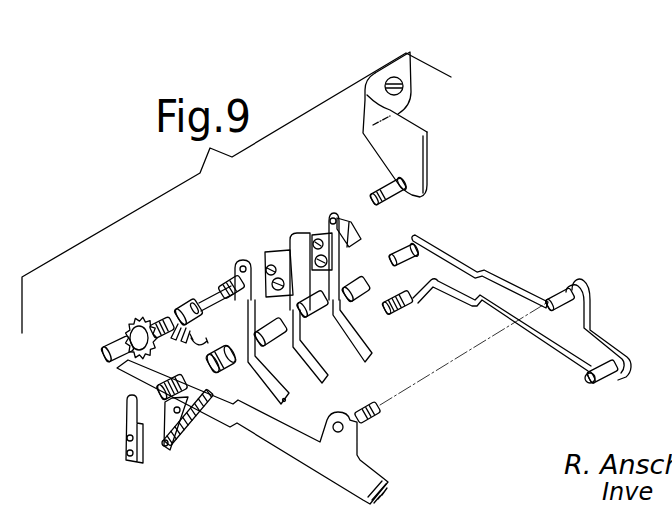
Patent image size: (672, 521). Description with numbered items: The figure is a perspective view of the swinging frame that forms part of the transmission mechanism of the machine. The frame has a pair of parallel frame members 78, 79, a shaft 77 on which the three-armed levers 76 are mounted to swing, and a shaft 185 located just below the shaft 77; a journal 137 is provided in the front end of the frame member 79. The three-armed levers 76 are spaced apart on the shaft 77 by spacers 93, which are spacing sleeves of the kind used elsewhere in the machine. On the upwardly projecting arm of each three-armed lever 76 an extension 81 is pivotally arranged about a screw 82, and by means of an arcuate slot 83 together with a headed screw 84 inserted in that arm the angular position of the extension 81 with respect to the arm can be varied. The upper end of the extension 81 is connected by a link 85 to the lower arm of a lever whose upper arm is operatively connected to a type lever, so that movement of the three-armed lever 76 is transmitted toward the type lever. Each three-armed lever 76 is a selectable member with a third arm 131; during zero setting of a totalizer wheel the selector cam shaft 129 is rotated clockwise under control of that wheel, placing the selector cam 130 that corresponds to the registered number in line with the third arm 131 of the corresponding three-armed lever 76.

The three-armed lever 76 is at (329, 281).
The shaft 77 is at (392, 264).
The frame member 78 is at (293, 445).
The frame member 79 is at (507, 280).
The extension 81 is at (235, 263).
The screw 82 is at (337, 257).
The arcuate slot 83 is at (343, 227).
The headed screw 84 is at (229, 279).
The link 85 is at (359, 233).
The spacers 93 is at (349, 298).
The selector cam shaft 129 is at (382, 187).
The selector cam 130 is at (191, 349).
The third arm 131 is at (208, 361).
The journal 137 is at (604, 381).
The shaft 185 is at (397, 316).